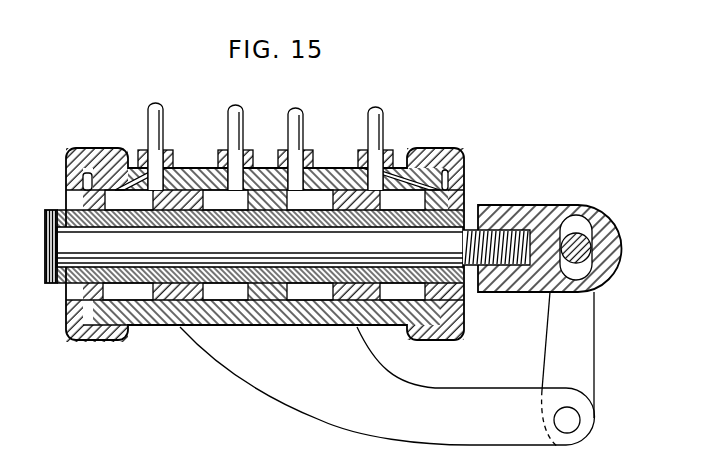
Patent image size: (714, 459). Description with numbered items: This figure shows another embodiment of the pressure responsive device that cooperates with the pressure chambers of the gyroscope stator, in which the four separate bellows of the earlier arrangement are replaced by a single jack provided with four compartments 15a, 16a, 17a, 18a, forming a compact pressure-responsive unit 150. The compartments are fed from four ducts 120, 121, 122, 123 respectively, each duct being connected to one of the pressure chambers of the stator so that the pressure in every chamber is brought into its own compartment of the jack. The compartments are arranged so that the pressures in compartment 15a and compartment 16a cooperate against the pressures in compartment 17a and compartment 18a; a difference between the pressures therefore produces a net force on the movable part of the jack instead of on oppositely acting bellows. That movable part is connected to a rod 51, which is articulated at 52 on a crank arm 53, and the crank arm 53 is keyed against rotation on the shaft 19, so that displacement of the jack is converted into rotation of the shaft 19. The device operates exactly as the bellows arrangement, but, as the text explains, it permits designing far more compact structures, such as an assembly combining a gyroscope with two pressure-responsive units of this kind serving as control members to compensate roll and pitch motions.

The conduit 120 is at (163, 151).
The conduit 122 is at (243, 152).
The conduit 121 is at (303, 153).
The conduit 123 is at (383, 152).
The articulation 52 is at (597, 227).
The rod 51 is at (57, 284).
The crank arm 53 is at (592, 374).
The shaft 19 is at (578, 425).
The jack compartment 15a is at (145, 325).
The pressure-responsive unit 150 is at (174, 326).
The jack compartment 17a is at (240, 326).
The jack compartment 16a is at (320, 326).
The jack compartment 18a is at (396, 326).